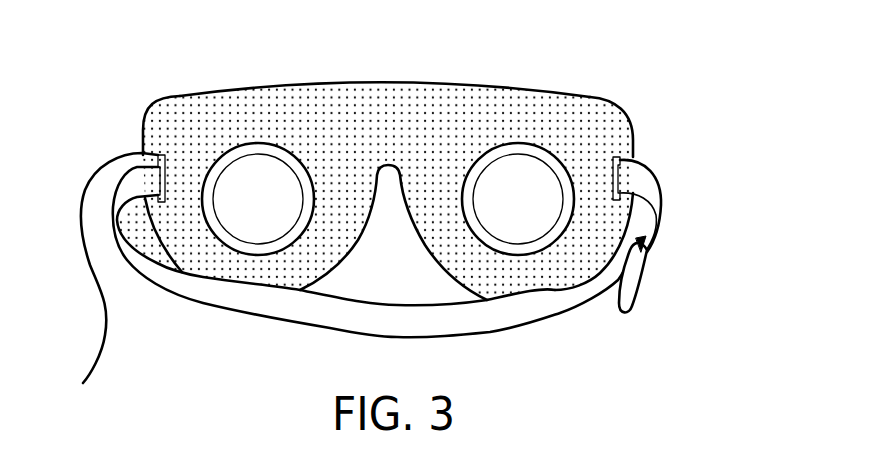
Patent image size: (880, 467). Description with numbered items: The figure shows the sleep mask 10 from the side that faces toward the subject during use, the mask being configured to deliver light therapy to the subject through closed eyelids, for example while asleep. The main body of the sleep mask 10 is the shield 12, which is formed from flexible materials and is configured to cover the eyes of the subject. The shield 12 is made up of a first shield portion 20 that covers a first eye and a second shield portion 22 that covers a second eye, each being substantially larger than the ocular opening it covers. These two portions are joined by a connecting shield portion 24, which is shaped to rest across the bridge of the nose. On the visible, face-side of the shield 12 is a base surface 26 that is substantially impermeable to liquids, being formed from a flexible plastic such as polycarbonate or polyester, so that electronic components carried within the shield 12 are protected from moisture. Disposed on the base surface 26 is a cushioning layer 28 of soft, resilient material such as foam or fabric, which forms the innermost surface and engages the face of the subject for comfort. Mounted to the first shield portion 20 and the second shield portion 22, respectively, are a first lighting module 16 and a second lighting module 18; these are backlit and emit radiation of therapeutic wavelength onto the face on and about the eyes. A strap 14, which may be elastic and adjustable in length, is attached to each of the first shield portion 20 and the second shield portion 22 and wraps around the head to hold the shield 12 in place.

The sleep mask 10 is at (113, 93).
The shield 12 is at (187, 93).
The strap 14 is at (653, 230).
The first lighting module 16 is at (271, 208).
The second lighting module 18 is at (530, 208).
The first shield portion 20 is at (258, 125).
The second shield portion 22 is at (518, 125).
The connecting shield portion 24 is at (390, 147).
The base surface 26 is at (450, 85).
The cushioning layer 28 is at (588, 133).